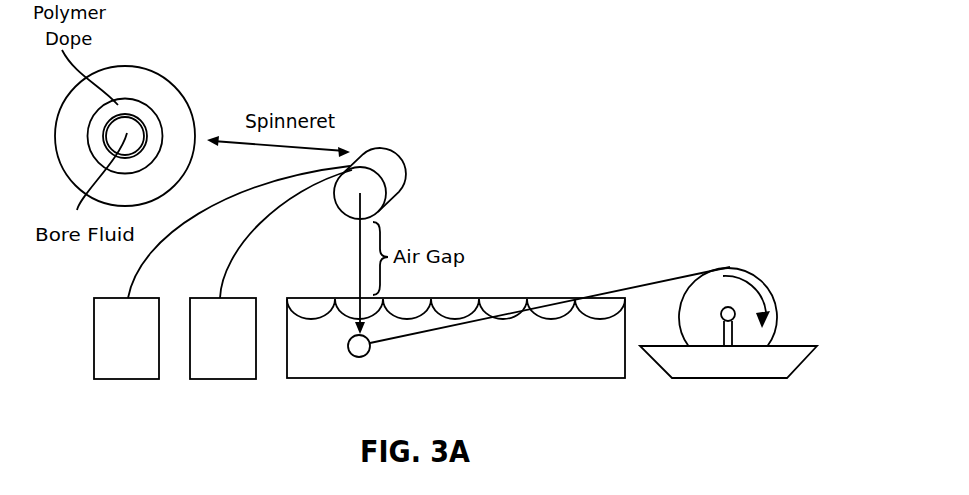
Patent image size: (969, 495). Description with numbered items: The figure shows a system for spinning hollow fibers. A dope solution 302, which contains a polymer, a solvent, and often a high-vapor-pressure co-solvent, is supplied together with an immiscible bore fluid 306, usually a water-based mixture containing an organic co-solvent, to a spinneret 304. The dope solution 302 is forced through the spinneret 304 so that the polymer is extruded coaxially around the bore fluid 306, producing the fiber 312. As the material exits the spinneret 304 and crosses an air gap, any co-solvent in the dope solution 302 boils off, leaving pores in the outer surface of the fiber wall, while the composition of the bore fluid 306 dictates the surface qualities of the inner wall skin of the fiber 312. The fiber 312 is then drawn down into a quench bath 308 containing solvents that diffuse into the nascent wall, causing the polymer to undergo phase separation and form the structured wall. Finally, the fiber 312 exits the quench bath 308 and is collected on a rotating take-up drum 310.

The dope solution 302 is at (222, 272).
The spinneret 304 is at (395, 188).
The bore fluid 306 is at (271, 274).
The quench bath 308 is at (456, 338).
The take-up drum 310 is at (791, 316).
The fiber 312 is at (657, 278).